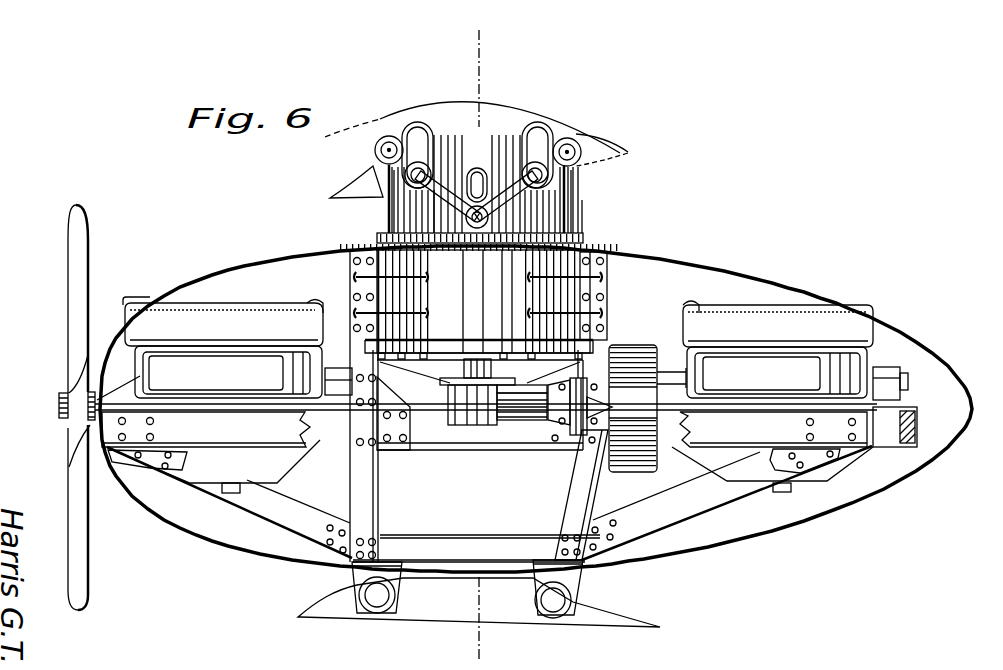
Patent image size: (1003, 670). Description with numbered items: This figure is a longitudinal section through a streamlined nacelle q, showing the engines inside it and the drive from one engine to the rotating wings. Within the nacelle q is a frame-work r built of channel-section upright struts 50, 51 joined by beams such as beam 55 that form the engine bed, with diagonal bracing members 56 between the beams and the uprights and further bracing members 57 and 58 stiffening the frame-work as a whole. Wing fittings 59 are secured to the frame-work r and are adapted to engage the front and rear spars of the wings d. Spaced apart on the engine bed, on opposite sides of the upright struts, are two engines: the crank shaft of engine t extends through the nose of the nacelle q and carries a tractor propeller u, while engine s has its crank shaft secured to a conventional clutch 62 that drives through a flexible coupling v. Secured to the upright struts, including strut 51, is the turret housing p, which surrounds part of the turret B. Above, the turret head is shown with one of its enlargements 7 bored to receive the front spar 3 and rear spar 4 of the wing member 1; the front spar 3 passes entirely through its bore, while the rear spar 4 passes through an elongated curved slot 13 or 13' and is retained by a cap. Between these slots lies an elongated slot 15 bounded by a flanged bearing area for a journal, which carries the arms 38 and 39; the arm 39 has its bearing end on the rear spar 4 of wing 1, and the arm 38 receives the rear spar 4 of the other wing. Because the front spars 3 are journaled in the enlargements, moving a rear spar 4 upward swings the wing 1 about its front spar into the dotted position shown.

The wing member 1 is at (361, 189).
The front spar 3 is at (387, 137).
The rear spar 4 is at (390, 175).
The elongated curved slot 13 is at (413, 129).
The elongated curved slot 13' is at (550, 134).
The elongated slot 15 is at (478, 170).
The arm 38 is at (510, 201).
The arm 39 is at (444, 198).
The turret B is at (562, 220).
The turret housing p is at (610, 287).
The nacelle q is at (727, 268).
The engine t is at (237, 342).
The engine s is at (795, 345).
The tractor propeller u is at (67, 321).
The flexible coupling v is at (578, 441).
The frame-work r is at (380, 495).
The upright strut 51 is at (367, 519).
The upright strut 50 is at (577, 505).
The beam 55 is at (487, 452).
The diagonal bracing member 56 is at (258, 505).
The bracing member 57 is at (446, 543).
The bracing member 58 is at (918, 424).
The wing fitting 59 is at (358, 568).
The clutch 62 is at (634, 352).
The wings d is at (502, 620).
The enlargement 7 is at (474, 38).